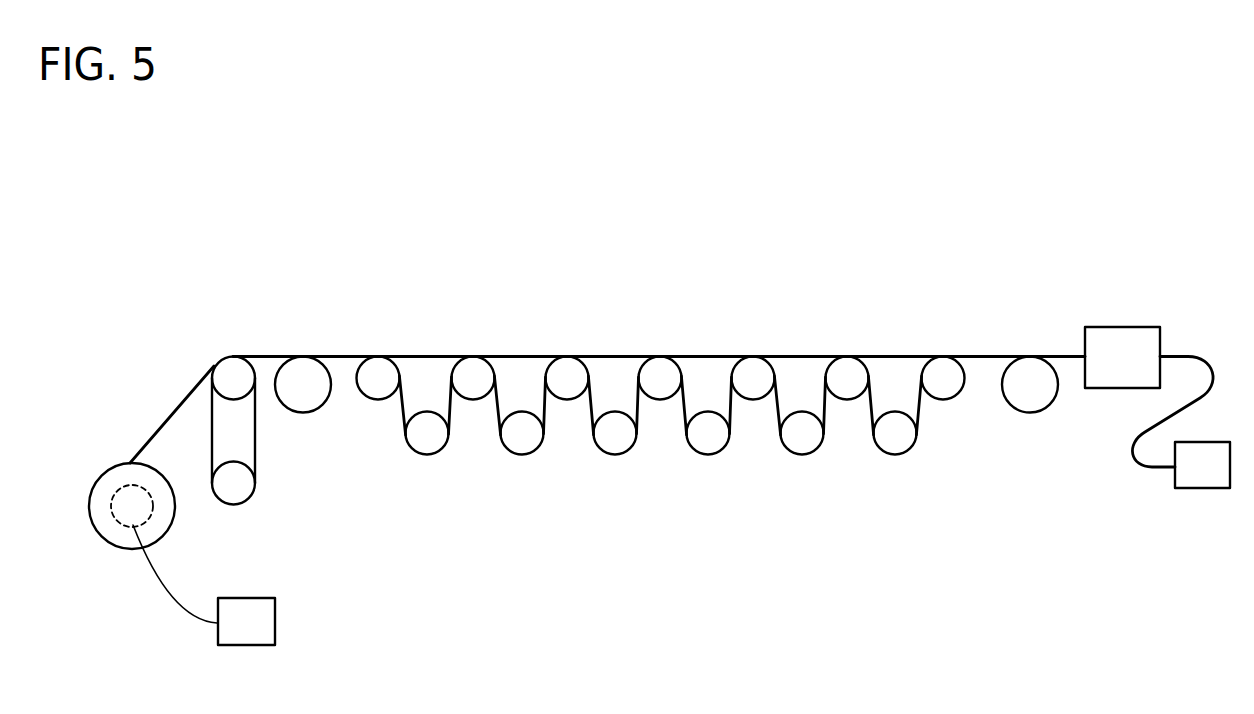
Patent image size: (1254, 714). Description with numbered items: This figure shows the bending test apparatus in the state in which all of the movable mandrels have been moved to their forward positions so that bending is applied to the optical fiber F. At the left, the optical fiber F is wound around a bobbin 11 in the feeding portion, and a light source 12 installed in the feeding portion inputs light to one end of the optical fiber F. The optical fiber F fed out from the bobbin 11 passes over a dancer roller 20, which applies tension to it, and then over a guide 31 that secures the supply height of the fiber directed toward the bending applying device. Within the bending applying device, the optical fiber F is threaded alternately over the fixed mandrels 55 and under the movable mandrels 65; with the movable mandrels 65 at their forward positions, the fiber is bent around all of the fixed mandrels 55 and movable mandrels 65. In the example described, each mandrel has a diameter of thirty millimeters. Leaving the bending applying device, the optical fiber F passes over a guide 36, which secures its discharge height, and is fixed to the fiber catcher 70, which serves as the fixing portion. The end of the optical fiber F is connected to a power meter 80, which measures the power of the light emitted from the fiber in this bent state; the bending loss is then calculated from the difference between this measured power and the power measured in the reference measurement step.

The optical fiber F is at (177, 407).
The bobbin 11 is at (123, 463).
The light source 12 is at (265, 618).
The dancer roller 20 is at (222, 349).
The guide 31 is at (303, 397).
The guide 36 is at (1030, 397).
The fixed mandrels 55 is at (562, 367).
The movable mandrels 65 is at (610, 442).
The fiber catcher 70 is at (1127, 338).
The power meter 80 is at (1202, 475).